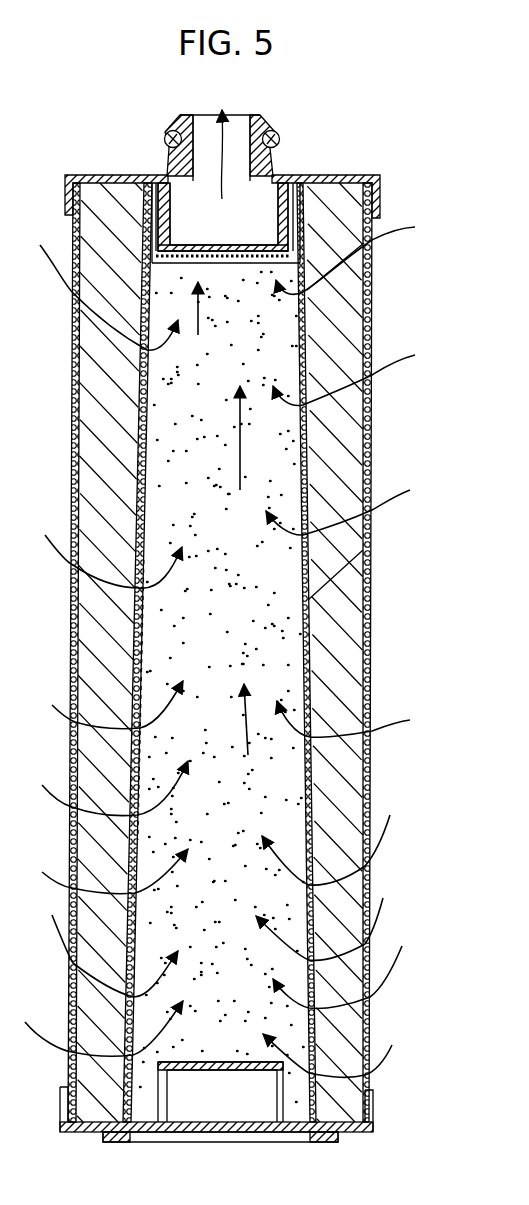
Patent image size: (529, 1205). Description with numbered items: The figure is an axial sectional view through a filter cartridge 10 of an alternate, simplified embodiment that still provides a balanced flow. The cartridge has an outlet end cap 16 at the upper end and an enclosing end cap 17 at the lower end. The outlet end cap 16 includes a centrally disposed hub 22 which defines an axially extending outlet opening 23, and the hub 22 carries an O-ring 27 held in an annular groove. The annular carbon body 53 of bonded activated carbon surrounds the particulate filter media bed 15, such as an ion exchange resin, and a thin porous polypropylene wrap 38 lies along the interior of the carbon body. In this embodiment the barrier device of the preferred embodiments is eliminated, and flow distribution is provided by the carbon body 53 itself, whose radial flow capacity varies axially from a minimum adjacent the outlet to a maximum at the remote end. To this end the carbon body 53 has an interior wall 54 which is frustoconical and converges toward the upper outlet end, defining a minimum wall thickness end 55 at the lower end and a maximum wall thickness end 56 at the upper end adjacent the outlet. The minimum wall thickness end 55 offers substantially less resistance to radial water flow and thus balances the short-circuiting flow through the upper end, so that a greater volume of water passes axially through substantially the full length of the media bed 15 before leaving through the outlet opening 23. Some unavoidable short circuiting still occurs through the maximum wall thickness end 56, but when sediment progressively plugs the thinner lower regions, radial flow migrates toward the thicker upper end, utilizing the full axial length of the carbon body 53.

The filter cartridge 10 is at (52, 174).
The particulate filter media bed 15 is at (230, 628).
The outlet end cap 16 is at (116, 174).
The enclosing end cap 17 is at (96, 1140).
The hub 22 is at (270, 155).
The outlet opening 23 is at (246, 128).
The O-ring 27 is at (282, 136).
The polypropylene wrap 38 is at (140, 428).
The carbon body 53 is at (103, 486).
The interior wall 54 is at (139, 640).
The minimum wall thickness end 55 is at (95, 1026).
The maximum wall thickness end 56 is at (106, 244).